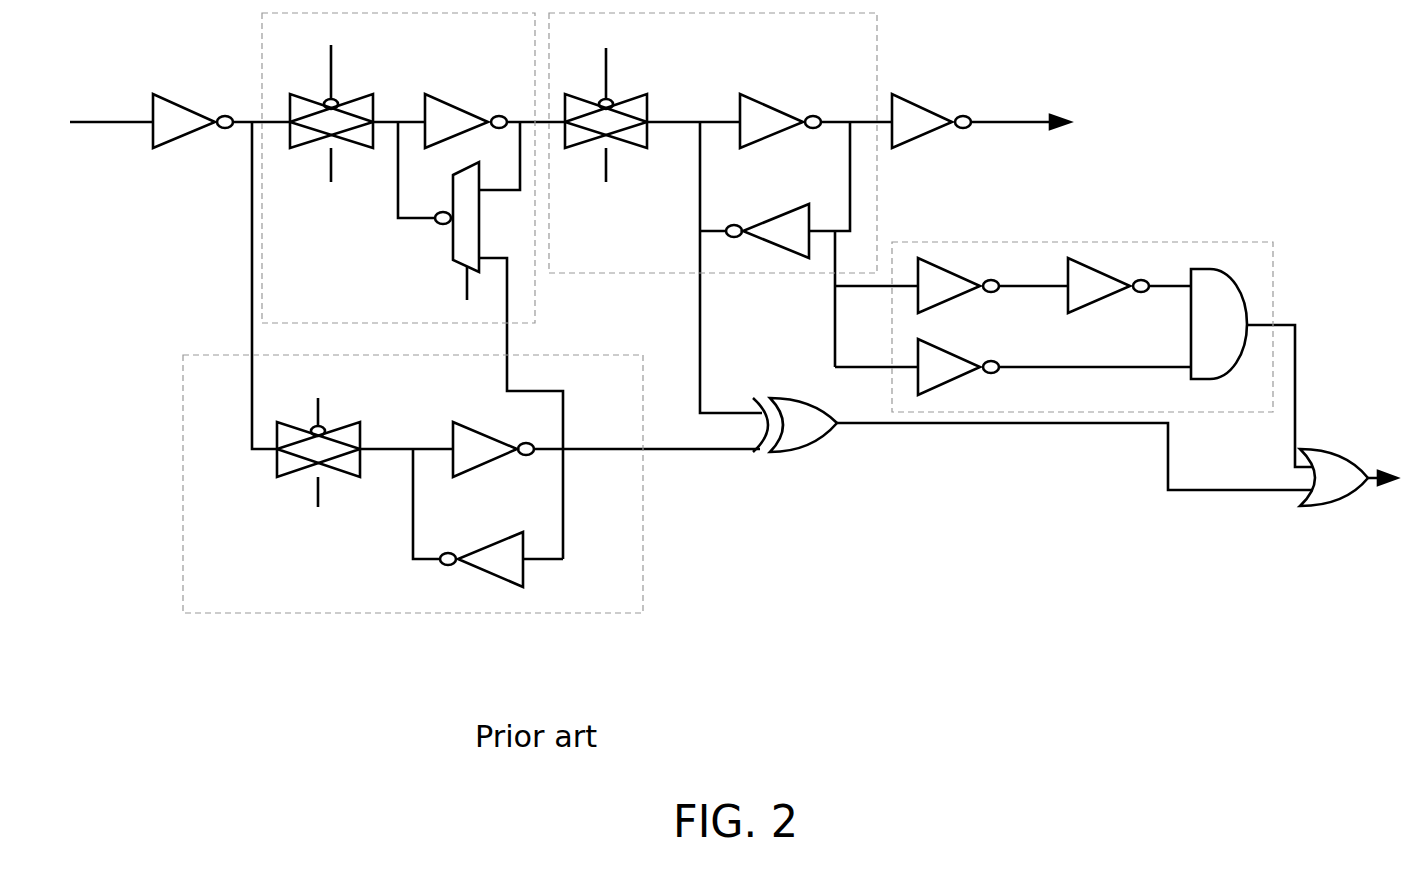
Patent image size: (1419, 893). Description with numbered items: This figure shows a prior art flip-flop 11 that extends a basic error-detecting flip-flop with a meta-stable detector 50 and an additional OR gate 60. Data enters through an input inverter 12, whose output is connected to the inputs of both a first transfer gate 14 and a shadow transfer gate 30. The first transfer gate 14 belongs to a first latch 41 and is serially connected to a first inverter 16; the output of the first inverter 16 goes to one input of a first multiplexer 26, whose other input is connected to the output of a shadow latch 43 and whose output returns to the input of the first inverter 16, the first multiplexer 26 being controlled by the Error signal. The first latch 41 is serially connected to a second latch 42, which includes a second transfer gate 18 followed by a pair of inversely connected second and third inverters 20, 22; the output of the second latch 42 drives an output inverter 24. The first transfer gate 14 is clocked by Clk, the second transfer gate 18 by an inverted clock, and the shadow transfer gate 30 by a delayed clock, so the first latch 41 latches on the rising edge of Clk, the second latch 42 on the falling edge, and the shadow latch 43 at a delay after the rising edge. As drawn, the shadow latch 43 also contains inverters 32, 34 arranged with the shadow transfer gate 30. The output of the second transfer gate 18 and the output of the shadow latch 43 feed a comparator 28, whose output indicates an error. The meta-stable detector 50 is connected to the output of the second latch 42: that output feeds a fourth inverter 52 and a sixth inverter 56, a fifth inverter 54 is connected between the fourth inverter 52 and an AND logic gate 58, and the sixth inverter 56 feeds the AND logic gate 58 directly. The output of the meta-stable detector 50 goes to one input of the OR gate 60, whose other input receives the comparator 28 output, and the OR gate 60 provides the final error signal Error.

The prior art flip-flop 11 is at (737, 354).
The input inverter 12 is at (193, 121).
The first transfer gate 14 is at (331, 121).
The first inverter 16 is at (466, 121).
The second transfer gate 18 is at (606, 121).
The second inverter 20 is at (780, 121).
The third inverter 22 is at (767, 231).
The output inverter 24 is at (931, 121).
The first multiplexer 26 is at (457, 217).
The comparator 28 is at (795, 425).
The shadow transfer gate 30 is at (318, 449).
The inverter 32 is at (493, 449).
The feedback inverter 34 is at (481, 559).
The first latch 41 is at (398, 168).
The second latch 42 is at (713, 143).
The shadow latch 43 is at (413, 484).
The meta-stable detector 50 is at (1082, 327).
The fourth inverter 52 is at (958, 285).
The fifth inverter 54 is at (1108, 285).
The sixth inverter 56 is at (958, 367).
The AND logic gate 58 is at (1219, 324).
The OR gate 60 is at (1334, 477).